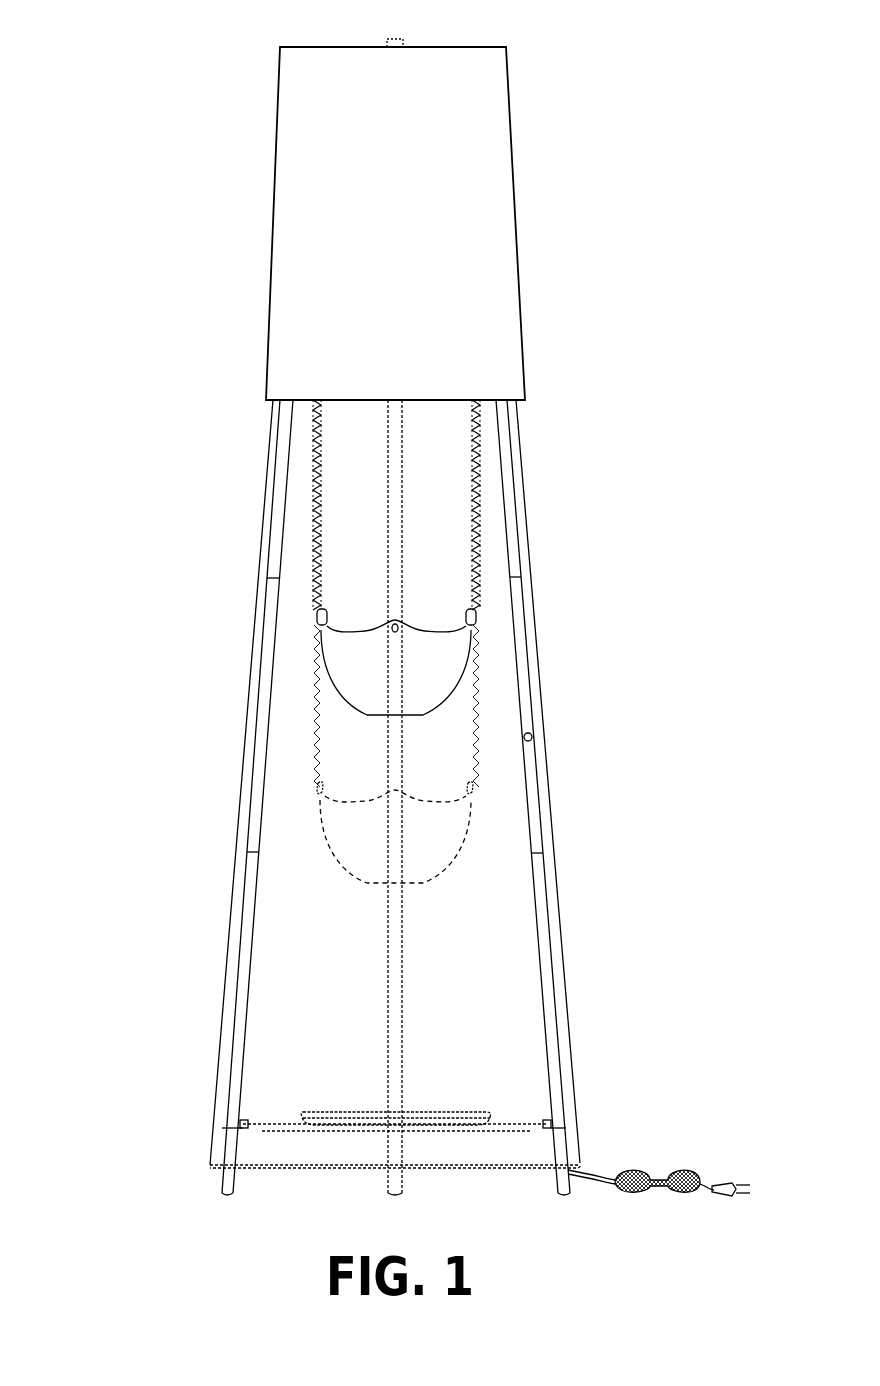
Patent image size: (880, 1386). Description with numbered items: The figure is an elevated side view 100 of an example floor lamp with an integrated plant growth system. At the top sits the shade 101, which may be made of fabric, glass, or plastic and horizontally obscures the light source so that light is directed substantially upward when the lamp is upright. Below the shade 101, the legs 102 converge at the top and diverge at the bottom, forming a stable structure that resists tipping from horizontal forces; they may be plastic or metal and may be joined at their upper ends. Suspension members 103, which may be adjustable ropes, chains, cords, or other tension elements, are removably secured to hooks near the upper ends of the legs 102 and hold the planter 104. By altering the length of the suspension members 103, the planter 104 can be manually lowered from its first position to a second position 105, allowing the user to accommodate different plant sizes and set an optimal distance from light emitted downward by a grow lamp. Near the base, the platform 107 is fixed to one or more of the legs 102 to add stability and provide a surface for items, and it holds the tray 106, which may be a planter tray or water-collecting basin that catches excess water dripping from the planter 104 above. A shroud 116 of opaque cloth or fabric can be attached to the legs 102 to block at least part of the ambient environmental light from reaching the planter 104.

The side view 100 is at (152, 95).
The shade 101 is at (515, 175).
The legs 102 is at (290, 478).
The suspension members 103 is at (323, 573).
The planter 104 is at (453, 645).
The second position 105 is at (476, 830).
The tray 106 is at (355, 1112).
The platform 107 is at (513, 1120).
The shroud 116 is at (562, 950).